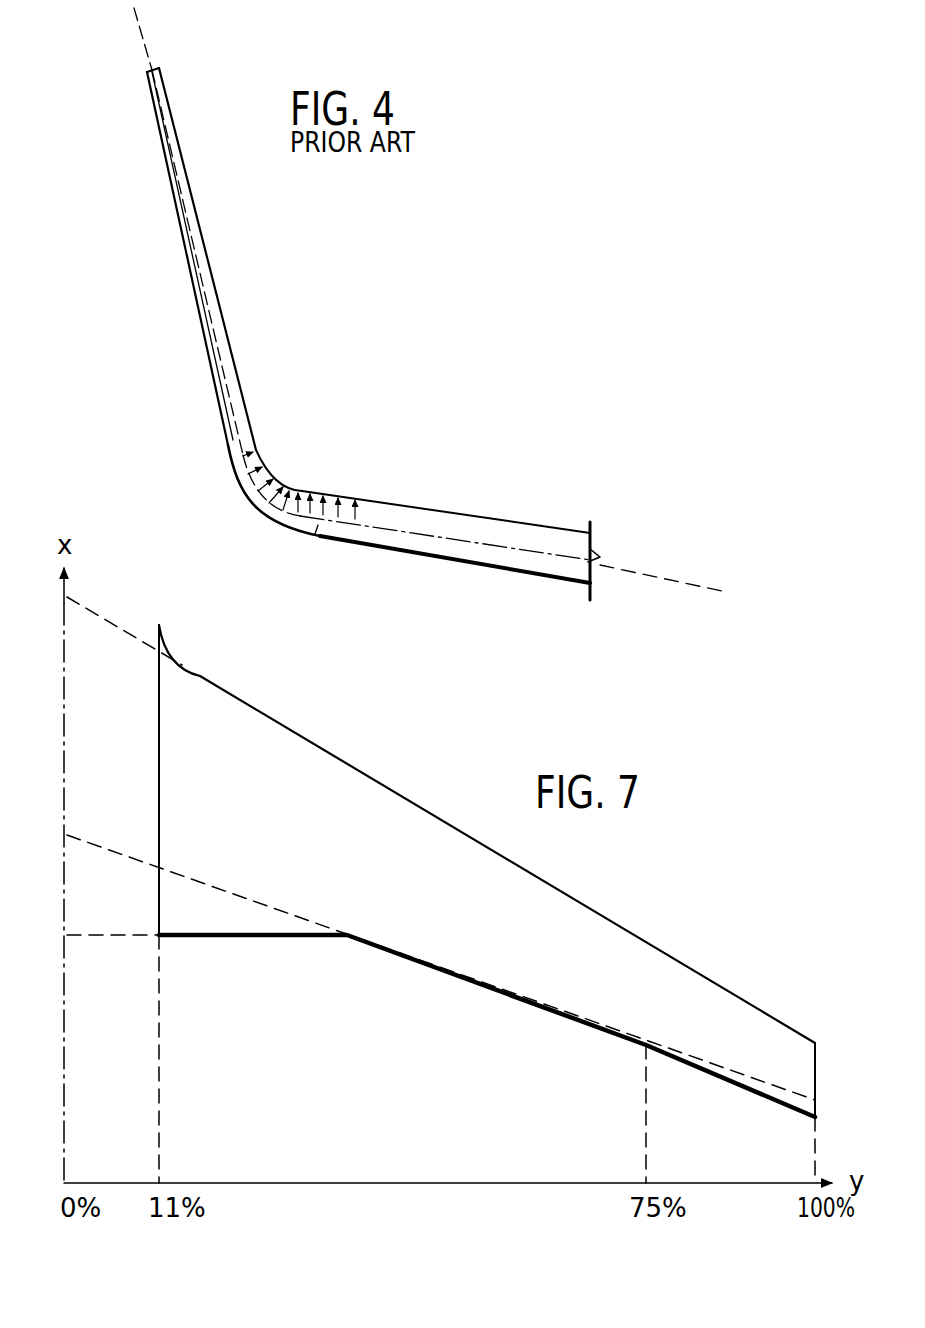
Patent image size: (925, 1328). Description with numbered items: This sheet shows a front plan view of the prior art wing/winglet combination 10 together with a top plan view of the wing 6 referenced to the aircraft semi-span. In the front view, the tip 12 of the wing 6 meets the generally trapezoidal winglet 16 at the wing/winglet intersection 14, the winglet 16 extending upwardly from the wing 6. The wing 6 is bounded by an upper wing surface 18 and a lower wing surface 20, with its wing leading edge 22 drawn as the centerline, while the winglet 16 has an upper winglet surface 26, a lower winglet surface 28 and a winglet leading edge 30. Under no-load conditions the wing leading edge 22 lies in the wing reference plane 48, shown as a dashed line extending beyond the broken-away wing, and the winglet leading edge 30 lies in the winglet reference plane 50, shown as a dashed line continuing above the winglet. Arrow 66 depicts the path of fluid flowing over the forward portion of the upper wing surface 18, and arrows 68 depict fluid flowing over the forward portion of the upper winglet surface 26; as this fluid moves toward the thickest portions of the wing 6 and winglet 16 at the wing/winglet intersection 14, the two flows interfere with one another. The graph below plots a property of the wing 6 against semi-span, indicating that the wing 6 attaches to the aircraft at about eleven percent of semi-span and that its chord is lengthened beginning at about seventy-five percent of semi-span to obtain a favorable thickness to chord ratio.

In FIG. 7, the wing 6 is at (370, 802).
In FIG. 4, the wing/winglet combination 10 is at (332, 368).
In FIG. 4, the wing tip 12 is at (450, 546).
In FIG. 4, the wing/winglet intersection 14 is at (248, 511).
In FIG. 4, the winglet 16 is at (186, 261).
In FIG. 4, the upper wing surface 18 is at (481, 517).
In FIG. 4, the lower wing surface 20 is at (502, 570).
In FIG. 4, the wing leading edge 22 is at (456, 543).
In FIG. 4, the upper winglet surface 26 is at (215, 283).
In FIG. 4, the lower winglet surface 28 is at (188, 262).
In FIG. 4, the winglet leading edge 30 is at (183, 225).
In FIG. 4, the wing reference plane 48 is at (680, 584).
In FIG. 4, the winglet reference plane 50 is at (140, 36).
In FIG. 4, the fluid flow arrow 66 is at (314, 535).
In FIG. 4, the fluid flow arrow 68 is at (233, 481).